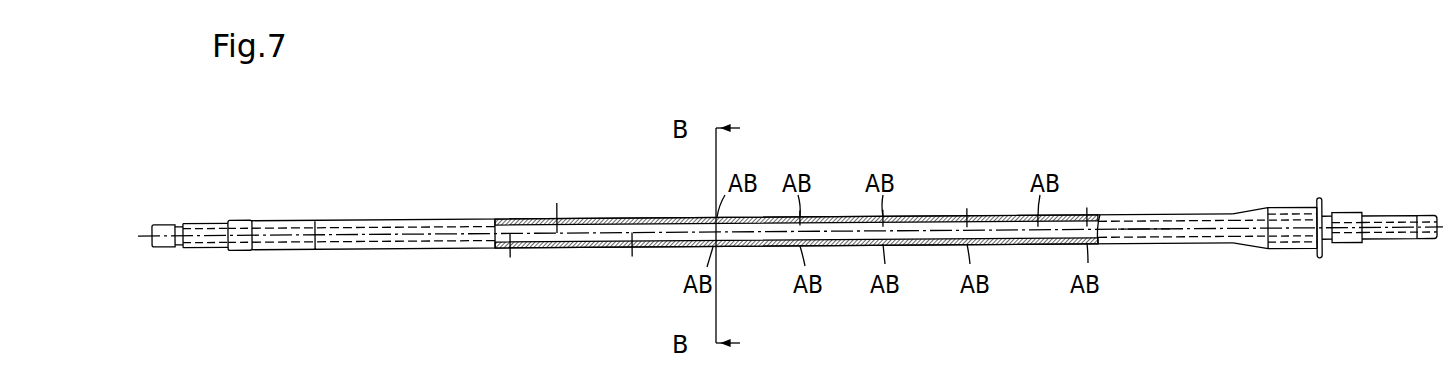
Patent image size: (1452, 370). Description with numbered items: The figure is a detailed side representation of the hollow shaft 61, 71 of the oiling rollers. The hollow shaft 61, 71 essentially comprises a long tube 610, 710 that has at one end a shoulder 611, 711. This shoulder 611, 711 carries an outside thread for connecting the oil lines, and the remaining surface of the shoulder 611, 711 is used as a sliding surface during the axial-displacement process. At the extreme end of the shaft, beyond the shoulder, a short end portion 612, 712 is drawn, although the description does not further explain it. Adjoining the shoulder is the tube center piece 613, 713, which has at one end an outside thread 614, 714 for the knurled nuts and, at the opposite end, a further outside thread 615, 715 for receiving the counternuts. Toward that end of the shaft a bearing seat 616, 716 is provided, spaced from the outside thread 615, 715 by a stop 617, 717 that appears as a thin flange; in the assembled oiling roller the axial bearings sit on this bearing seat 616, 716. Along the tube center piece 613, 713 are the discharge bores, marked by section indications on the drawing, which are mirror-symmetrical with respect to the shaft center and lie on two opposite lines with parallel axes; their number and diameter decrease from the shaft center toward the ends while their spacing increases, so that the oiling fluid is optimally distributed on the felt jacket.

The tube 610 is at (742, 242).
The tube 710 is at (438, 214).
The shoulder 611 is at (809, 242).
The shoulder 711 is at (208, 223).
The end piece 612 is at (144, 267).
The end piece 712 is at (160, 250).
The tube center piece 613 is at (373, 269).
The tube center piece 713 is at (407, 244).
The outside thread 614 is at (253, 265).
The outside thread 714 is at (238, 253).
The outside thread 615 is at (1360, 205).
The outside thread 715 is at (1352, 213).
The bearing seat 616 is at (1252, 191).
The bearing seat 716 is at (1283, 222).
The stop 617 is at (1319, 195).
The stop 717 is at (1320, 210).
The hollow shaft 61 is at (797, 255).
The hollow shaft 71 is at (568, 233).